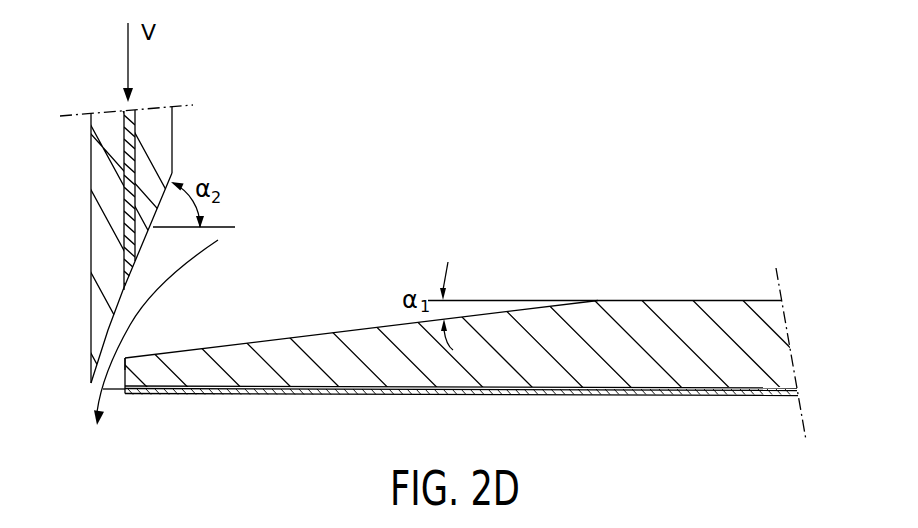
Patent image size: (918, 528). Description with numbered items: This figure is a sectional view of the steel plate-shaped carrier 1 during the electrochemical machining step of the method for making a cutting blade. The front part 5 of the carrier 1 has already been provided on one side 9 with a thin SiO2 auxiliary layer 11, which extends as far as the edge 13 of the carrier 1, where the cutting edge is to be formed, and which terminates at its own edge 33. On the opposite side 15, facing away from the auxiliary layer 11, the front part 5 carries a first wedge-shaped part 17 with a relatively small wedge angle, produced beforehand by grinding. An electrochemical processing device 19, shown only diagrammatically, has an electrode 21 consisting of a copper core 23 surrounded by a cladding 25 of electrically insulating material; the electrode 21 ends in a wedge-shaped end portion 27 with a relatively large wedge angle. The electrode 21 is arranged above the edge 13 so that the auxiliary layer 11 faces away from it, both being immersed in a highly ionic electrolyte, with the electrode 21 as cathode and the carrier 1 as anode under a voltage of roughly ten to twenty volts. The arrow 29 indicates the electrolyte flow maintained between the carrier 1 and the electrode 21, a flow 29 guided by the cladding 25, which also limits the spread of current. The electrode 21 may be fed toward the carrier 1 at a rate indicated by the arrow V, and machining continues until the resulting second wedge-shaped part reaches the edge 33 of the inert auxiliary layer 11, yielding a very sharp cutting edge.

The carrier 1 is at (777, 343).
The front part 5 is at (562, 373).
The side 9 is at (613, 392).
The auxiliary layer 11 is at (672, 396).
The edge 13 is at (123, 362).
The side 15 is at (683, 300).
The first wedge-shaped part 17 is at (263, 340).
The electrochemical processing device 19 is at (360, 188).
The electrode 21 is at (76, 241).
The copper core 23 is at (124, 167).
The cladding 25 is at (160, 128).
The wedge-shaped end portion 27 is at (130, 278).
The arrow 29 is at (132, 325).
The edge 33 is at (103, 389).